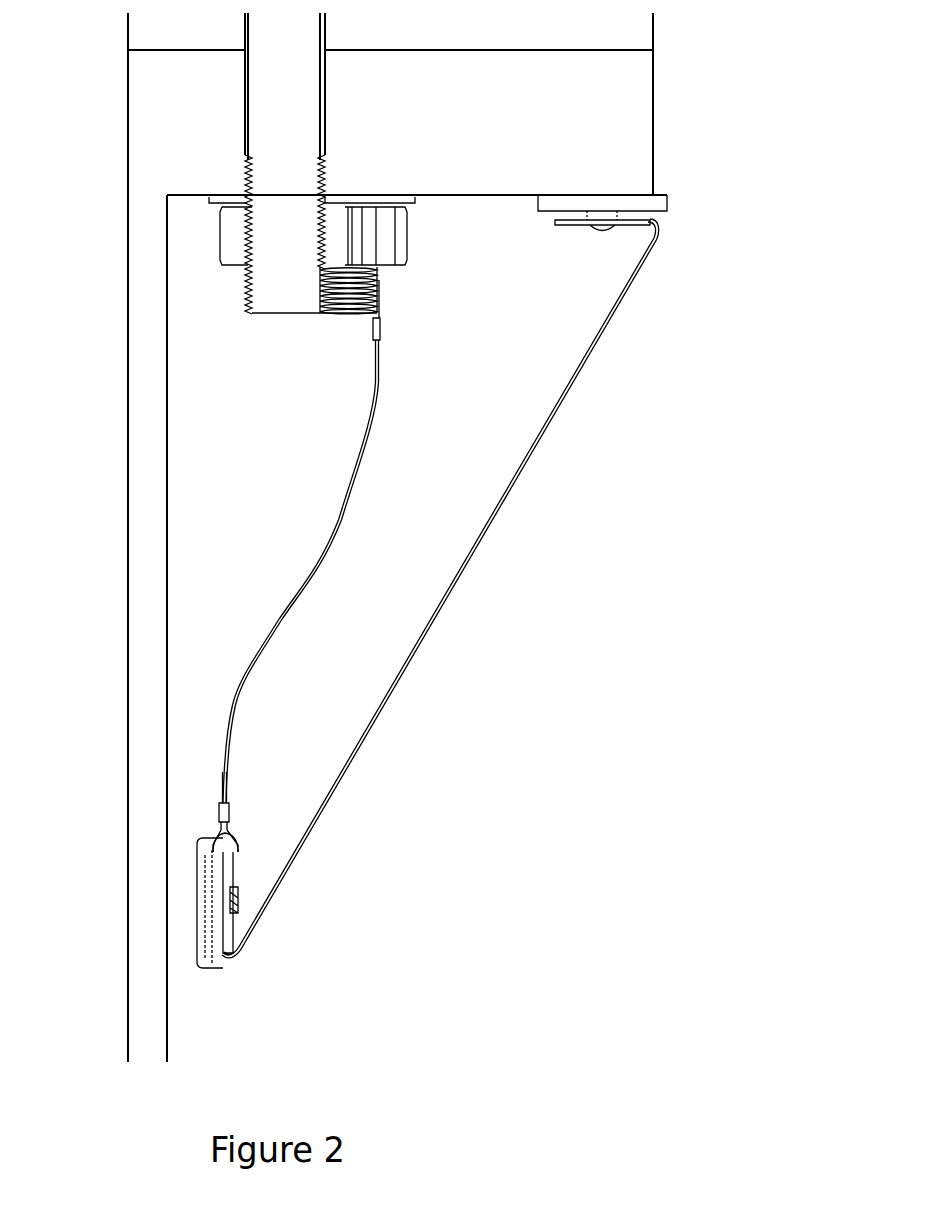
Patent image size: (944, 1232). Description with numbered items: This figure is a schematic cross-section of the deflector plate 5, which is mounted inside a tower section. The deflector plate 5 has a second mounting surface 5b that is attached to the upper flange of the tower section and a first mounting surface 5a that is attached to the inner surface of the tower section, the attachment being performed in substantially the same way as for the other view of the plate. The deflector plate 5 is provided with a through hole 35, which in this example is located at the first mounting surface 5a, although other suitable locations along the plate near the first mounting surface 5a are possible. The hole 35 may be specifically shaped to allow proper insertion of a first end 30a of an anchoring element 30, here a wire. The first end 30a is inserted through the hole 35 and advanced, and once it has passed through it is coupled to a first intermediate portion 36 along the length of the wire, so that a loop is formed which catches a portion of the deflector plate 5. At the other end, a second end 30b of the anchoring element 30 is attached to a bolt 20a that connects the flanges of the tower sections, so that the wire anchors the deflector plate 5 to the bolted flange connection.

The deflector plate 5 is at (468, 560).
The first mounting surface 5a is at (200, 940).
The second mounting surface 5b is at (555, 197).
The bolt 20a is at (345, 315).
The anchoring element 30 is at (330, 510).
The first end 30a is at (230, 782).
The second end 30b is at (380, 352).
The through hole 35 is at (215, 883).
The first intermediate portion 36 is at (217, 797).